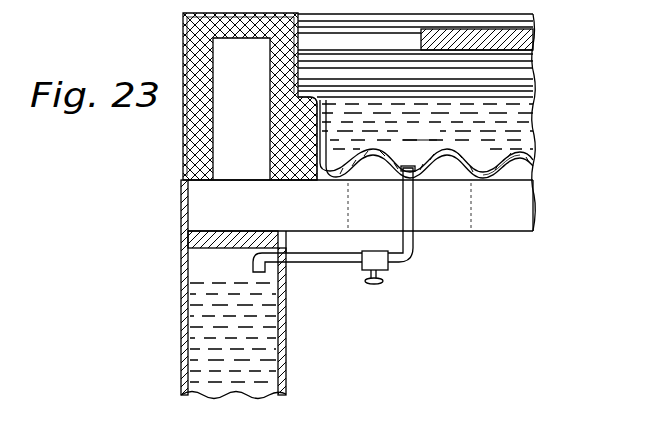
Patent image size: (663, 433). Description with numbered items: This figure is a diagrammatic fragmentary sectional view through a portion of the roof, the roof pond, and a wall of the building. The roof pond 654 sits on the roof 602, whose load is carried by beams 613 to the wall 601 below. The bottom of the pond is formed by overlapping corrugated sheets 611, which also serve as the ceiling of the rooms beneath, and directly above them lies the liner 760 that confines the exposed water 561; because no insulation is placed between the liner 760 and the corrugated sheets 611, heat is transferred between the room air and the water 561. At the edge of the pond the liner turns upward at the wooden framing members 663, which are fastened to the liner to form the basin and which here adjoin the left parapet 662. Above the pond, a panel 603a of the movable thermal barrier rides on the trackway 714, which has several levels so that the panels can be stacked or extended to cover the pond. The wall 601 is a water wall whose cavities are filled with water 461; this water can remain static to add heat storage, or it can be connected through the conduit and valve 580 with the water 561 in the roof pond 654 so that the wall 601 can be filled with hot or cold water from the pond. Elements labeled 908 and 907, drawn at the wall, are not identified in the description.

The left parapet 662 is at (190, 131).
The trackway 714 is at (534, 90).
The movable thermal barrier panel 603a is at (525, 40).
The exposed water 561 is at (515, 137).
The roof pond 654 is at (419, 130).
The liner 760 is at (530, 160).
The overlapping corrugated sheets 611 is at (527, 180).
The roof 602 is at (512, 181).
The beams 613 is at (513, 217).
The wooden framing members 663 is at (294, 161).
The conduit and valve 580 is at (414, 245).
The tank wall 908 is at (284, 310).
The water 461 is at (245, 354).
The water wall 601 is at (219, 352).
The tank outer wall 907 is at (184, 382).